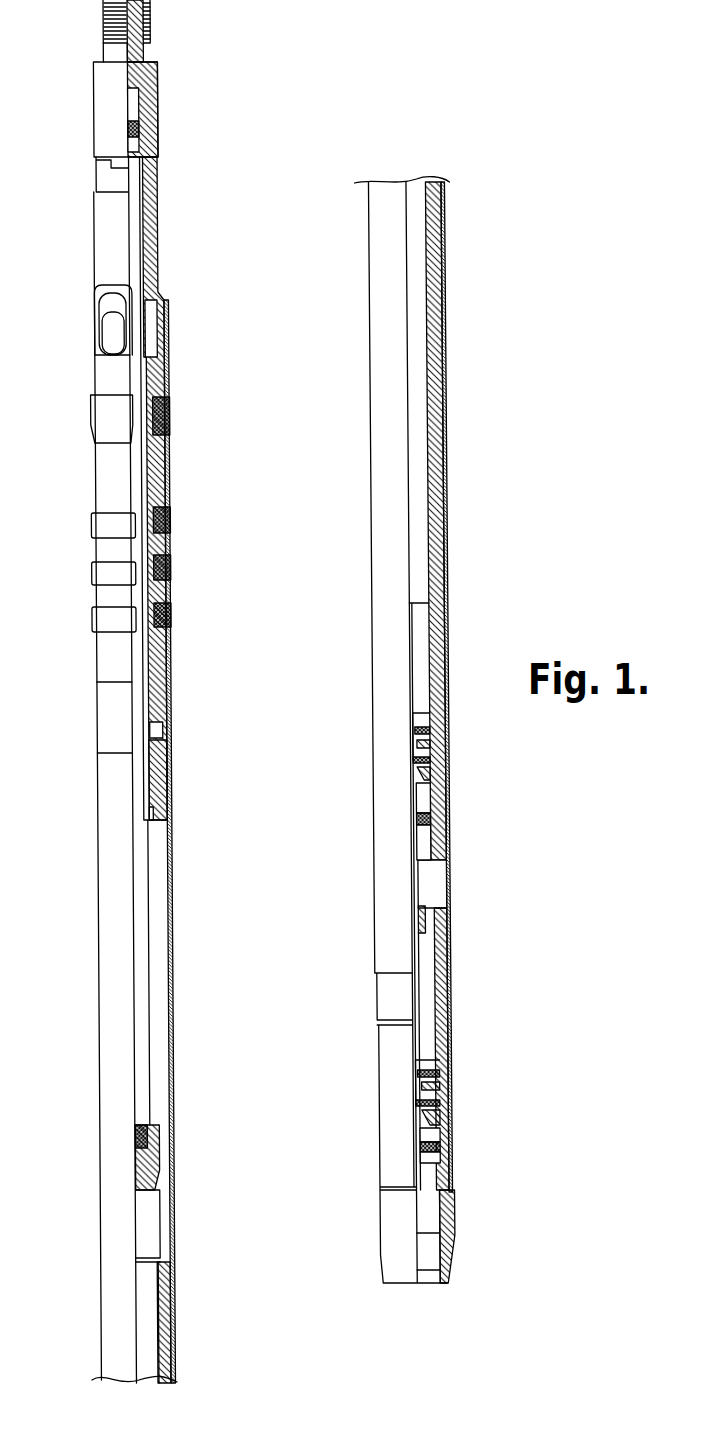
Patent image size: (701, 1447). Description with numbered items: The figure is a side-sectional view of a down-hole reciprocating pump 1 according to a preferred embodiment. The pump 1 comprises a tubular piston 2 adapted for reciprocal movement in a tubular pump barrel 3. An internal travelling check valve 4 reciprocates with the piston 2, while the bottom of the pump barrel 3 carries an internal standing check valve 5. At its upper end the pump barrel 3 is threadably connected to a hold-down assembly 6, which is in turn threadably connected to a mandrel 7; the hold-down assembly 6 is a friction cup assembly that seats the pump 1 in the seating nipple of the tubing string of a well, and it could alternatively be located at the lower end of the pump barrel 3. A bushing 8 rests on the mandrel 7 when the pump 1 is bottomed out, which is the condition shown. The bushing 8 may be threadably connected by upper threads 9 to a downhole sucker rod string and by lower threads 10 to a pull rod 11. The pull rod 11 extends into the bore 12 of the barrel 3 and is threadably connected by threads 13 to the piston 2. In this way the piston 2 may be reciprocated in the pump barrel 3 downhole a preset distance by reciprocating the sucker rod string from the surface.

The down-hole reciprocating pump 1 is at (123, 691).
The tubular piston 2 is at (161, 1350).
The tubular pump barrel 3 is at (164, 977).
The internal travelling check valve 4 is at (464, 712).
The internal standing check valve 5 is at (461, 1050).
The hold-down assembly 6 is at (182, 503).
The mandrel 7 is at (158, 238).
The bushing 8 is at (159, 106).
The upper threads 9 is at (101, 23).
The lower threads 10 is at (142, 131).
The pull rod 11 is at (136, 1095).
The bore 12 is at (150, 866).
The threads 13 is at (128, 1130).